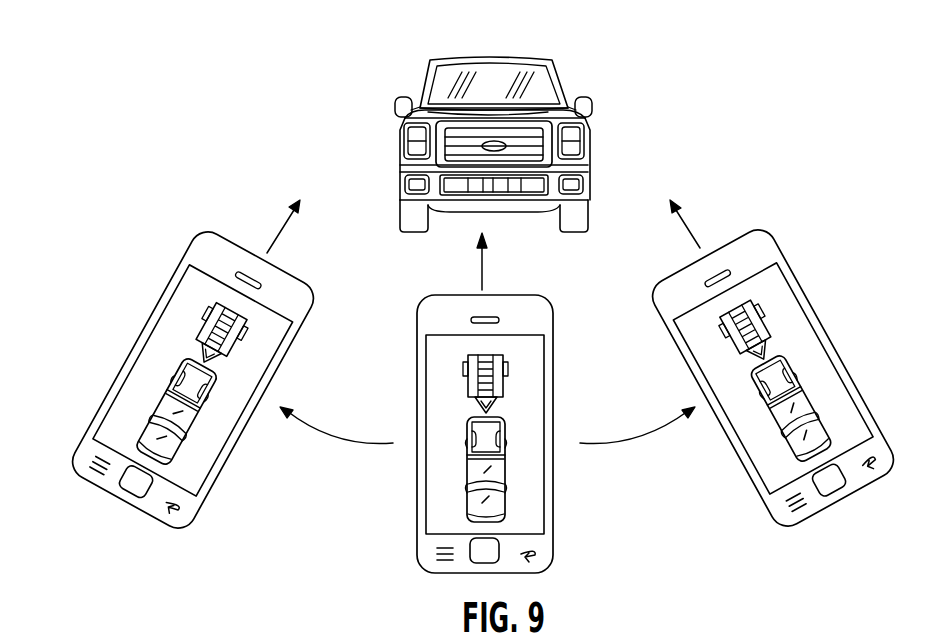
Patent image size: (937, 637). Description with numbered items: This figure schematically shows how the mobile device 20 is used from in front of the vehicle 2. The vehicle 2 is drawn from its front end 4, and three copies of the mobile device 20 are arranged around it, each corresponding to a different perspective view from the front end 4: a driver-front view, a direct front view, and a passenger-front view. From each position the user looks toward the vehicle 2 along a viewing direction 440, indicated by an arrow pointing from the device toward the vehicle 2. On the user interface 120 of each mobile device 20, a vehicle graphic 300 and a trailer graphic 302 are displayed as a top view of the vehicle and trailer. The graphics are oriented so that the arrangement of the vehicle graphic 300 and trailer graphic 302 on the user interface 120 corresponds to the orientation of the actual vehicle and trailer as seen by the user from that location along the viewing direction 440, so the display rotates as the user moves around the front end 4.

The vehicle 2 is at (398, 53).
The front end 4 is at (590, 150).
The mobile device 20 is at (417, 402).
The user interface 120 is at (438, 502).
The vehicle graphic 300 is at (503, 488).
The trailer graphic 302 is at (474, 373).
The viewing direction 440 is at (480, 273).